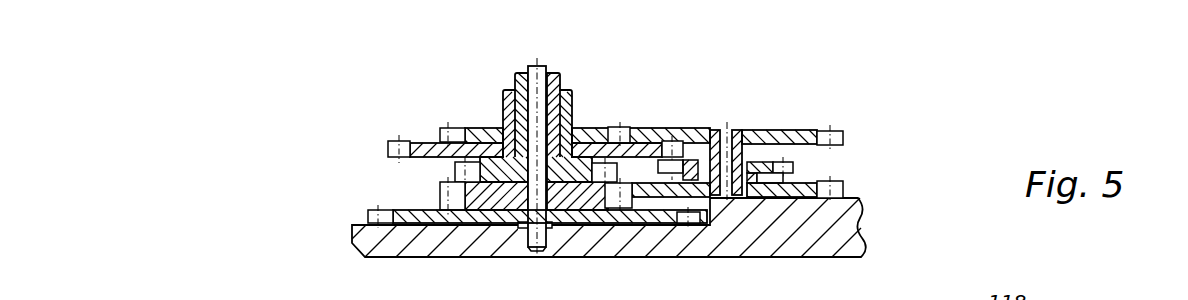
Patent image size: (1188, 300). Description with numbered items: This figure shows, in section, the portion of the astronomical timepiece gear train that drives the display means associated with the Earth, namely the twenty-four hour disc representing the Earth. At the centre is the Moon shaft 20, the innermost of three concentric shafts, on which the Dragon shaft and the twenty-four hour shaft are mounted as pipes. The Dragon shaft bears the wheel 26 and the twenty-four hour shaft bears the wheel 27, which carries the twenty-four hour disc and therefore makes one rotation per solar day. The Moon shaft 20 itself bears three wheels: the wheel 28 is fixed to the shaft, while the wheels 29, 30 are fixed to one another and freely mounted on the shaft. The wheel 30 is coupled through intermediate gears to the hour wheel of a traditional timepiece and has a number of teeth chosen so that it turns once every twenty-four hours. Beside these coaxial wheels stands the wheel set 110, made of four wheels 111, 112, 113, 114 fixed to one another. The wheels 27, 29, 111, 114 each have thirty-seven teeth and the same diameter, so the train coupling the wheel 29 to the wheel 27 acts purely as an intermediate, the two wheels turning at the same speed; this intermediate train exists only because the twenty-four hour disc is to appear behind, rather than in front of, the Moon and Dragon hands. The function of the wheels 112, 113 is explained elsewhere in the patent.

The Moon shaft 20 is at (532, 250).
The wheel 26 is at (387, 150).
The wheel 27 is at (444, 128).
The wheel 28 is at (455, 168).
The wheel 29 is at (443, 197).
The wheel 30 is at (367, 215).
The wheel set 110 is at (734, 120).
The wheel 111 is at (843, 189).
The wheel 112 is at (785, 178).
The wheel 113 is at (795, 167).
The wheel 114 is at (843, 135).